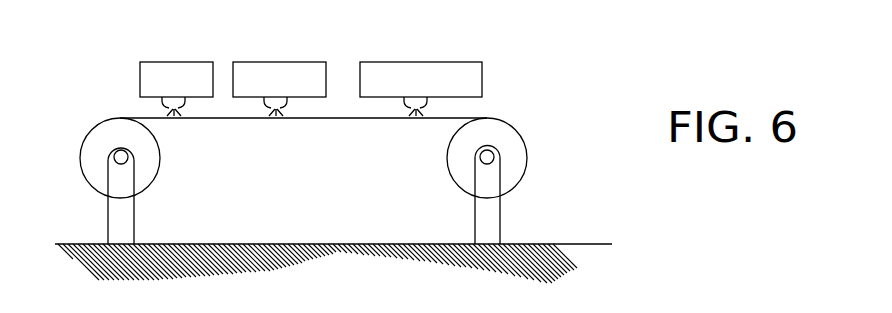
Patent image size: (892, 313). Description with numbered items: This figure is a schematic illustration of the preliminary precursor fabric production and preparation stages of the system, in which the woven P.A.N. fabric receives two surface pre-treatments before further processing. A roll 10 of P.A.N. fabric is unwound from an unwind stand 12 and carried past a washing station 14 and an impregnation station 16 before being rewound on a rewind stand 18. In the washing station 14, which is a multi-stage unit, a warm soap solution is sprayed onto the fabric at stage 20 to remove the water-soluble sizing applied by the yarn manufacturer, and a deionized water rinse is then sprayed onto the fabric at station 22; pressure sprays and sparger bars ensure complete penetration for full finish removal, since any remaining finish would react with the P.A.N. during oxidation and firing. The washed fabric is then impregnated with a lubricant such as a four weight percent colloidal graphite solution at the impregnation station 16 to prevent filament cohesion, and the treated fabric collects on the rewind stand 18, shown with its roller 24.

The roll of P.A.N. fabric 10 is at (161, 160).
The unwind stand 12 is at (88, 200).
The washing station 14 is at (222, 57).
The impregnation station 16 is at (425, 57).
The rewind stand 18 is at (535, 177).
The soap solution stage 20 is at (150, 63).
The deionized water rinse station 22 is at (273, 62).
The roller 24 is at (520, 137).